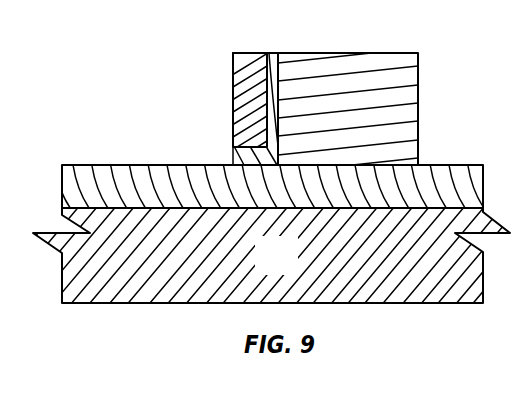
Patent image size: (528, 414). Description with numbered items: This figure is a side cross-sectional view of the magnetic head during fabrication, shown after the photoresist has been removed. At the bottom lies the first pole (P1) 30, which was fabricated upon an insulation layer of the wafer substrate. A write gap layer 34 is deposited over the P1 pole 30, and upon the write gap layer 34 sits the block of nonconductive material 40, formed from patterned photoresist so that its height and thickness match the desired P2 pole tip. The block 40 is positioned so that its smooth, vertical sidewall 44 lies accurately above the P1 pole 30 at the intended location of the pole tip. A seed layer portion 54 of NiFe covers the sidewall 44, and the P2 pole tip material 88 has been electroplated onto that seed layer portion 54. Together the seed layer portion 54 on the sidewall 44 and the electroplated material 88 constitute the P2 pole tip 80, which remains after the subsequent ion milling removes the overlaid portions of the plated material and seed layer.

The first pole (P1) 30 is at (291, 267).
The write gap layer 34 is at (430, 192).
The block of nonconductive material 40 is at (397, 63).
The sidewall 44 is at (276, 143).
The seed layer portion 54 is at (271, 113).
The P2 pole tip 80 is at (250, 65).
The P2 pole tip material 88 is at (248, 65).